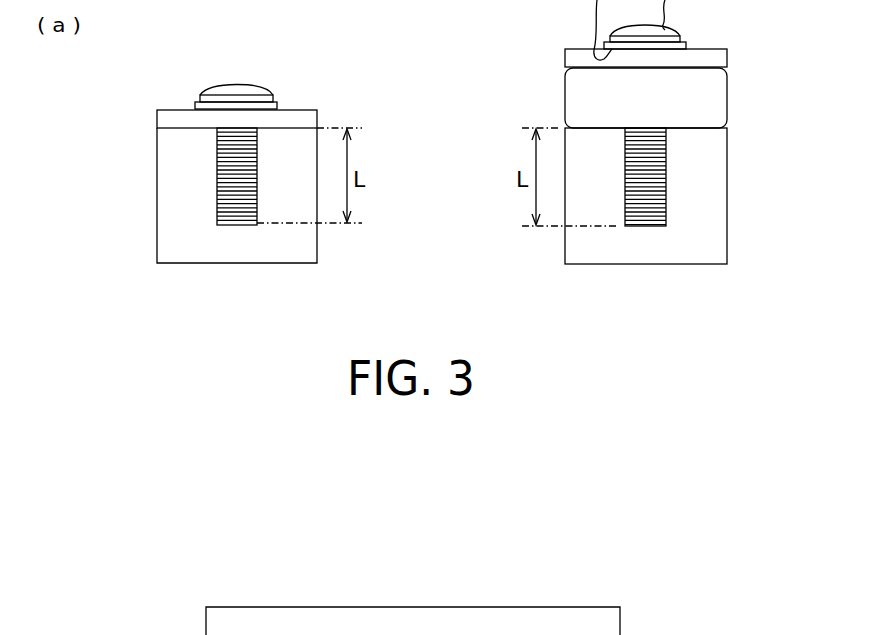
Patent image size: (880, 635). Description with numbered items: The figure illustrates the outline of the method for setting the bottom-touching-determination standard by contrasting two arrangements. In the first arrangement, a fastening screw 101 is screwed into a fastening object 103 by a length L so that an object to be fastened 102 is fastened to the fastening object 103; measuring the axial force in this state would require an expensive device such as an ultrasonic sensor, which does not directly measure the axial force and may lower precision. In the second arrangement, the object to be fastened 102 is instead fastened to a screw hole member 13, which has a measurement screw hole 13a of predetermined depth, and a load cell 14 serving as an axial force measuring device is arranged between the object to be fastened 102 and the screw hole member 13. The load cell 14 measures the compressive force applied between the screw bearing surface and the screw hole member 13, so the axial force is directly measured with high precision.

The fastening screw 101 is at (253, 90).
The object to be fastened 102 is at (160, 118).
The fastening object 103 is at (160, 195).
The screw hole member 13 is at (718, 195).
The measurement screw hole 13a is at (655, 205).
The load cell 14 is at (718, 97).